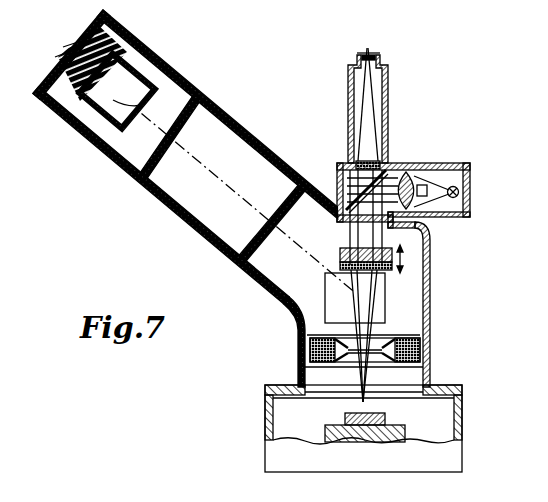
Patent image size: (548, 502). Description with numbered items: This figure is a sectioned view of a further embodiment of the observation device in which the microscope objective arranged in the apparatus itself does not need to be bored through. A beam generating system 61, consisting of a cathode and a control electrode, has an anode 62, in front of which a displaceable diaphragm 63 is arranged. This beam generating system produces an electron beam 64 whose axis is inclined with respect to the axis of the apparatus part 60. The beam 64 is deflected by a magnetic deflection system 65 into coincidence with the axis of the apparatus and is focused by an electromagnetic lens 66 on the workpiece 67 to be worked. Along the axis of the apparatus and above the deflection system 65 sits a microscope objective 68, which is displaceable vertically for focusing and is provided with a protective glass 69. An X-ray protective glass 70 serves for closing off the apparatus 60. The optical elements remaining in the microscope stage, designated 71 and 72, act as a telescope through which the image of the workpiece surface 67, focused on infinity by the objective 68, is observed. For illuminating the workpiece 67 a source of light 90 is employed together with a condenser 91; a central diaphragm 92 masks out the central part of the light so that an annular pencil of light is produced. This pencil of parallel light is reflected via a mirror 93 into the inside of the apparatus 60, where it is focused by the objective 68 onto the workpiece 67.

The apparatus part 60 is at (300, 366).
The beam generating system 61 is at (138, 88).
The anode 62 is at (193, 118).
The displaceable diaphragm 63 is at (293, 197).
The electron beam 64 is at (228, 182).
The magnetic deflection system 65 is at (381, 312).
The electromagnetic lens 66 is at (430, 344).
The workpiece 67 is at (386, 416).
The microscope objective 68 is at (387, 250).
The protective glass 69 is at (387, 270).
The X-ray protective glass 70 is at (352, 219).
The optical element 71 is at (388, 152).
The optical element 72 is at (371, 52).
The lamp 90 is at (467, 190).
The condenser 91 is at (413, 172).
The central diaphragm 92 is at (419, 187).
The mirror 93 is at (338, 163).